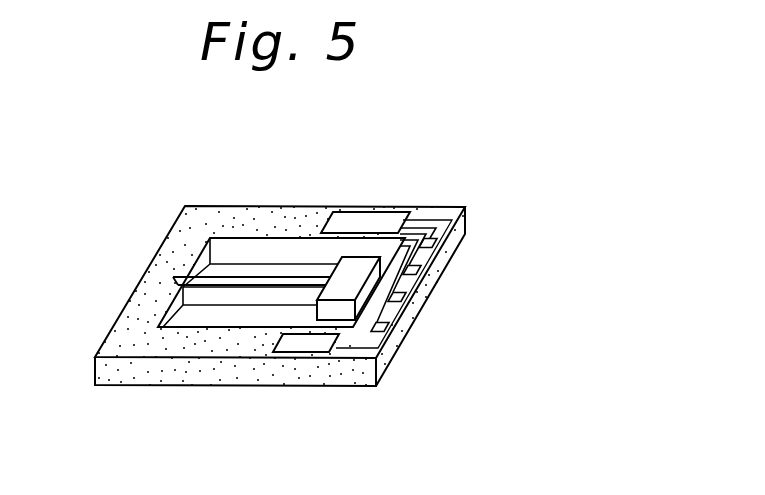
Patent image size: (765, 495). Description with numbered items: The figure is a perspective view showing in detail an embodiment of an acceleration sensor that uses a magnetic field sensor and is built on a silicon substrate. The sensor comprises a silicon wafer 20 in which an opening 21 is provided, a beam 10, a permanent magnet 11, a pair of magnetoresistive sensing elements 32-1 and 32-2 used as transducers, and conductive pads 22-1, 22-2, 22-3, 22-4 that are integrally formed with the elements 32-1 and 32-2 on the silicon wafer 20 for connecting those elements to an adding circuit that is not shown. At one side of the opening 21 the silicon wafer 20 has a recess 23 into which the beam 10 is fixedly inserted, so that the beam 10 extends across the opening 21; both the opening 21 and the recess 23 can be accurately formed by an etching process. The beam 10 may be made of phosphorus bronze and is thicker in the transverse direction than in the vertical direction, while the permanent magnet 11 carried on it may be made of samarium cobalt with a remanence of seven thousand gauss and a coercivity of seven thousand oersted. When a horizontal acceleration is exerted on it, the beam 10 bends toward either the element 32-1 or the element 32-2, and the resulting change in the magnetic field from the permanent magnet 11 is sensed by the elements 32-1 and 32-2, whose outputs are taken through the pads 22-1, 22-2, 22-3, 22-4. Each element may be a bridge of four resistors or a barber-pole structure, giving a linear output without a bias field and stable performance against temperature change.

The silicon wafer 20 is at (235, 206).
The opening 21 is at (222, 251).
The beam 10 is at (234, 300).
The recess 23 is at (177, 283).
The permanent magnet 11 is at (362, 281).
The magnetoresistive sensing element 32-1 is at (306, 350).
The magnetoresistive sensing element 32-2 is at (380, 220).
The conductive pad 22-1 is at (440, 245).
The conductive pad 22-2 is at (422, 271).
The conductive pad 22-3 is at (405, 300).
The conductive pad 22-4 is at (388, 331).